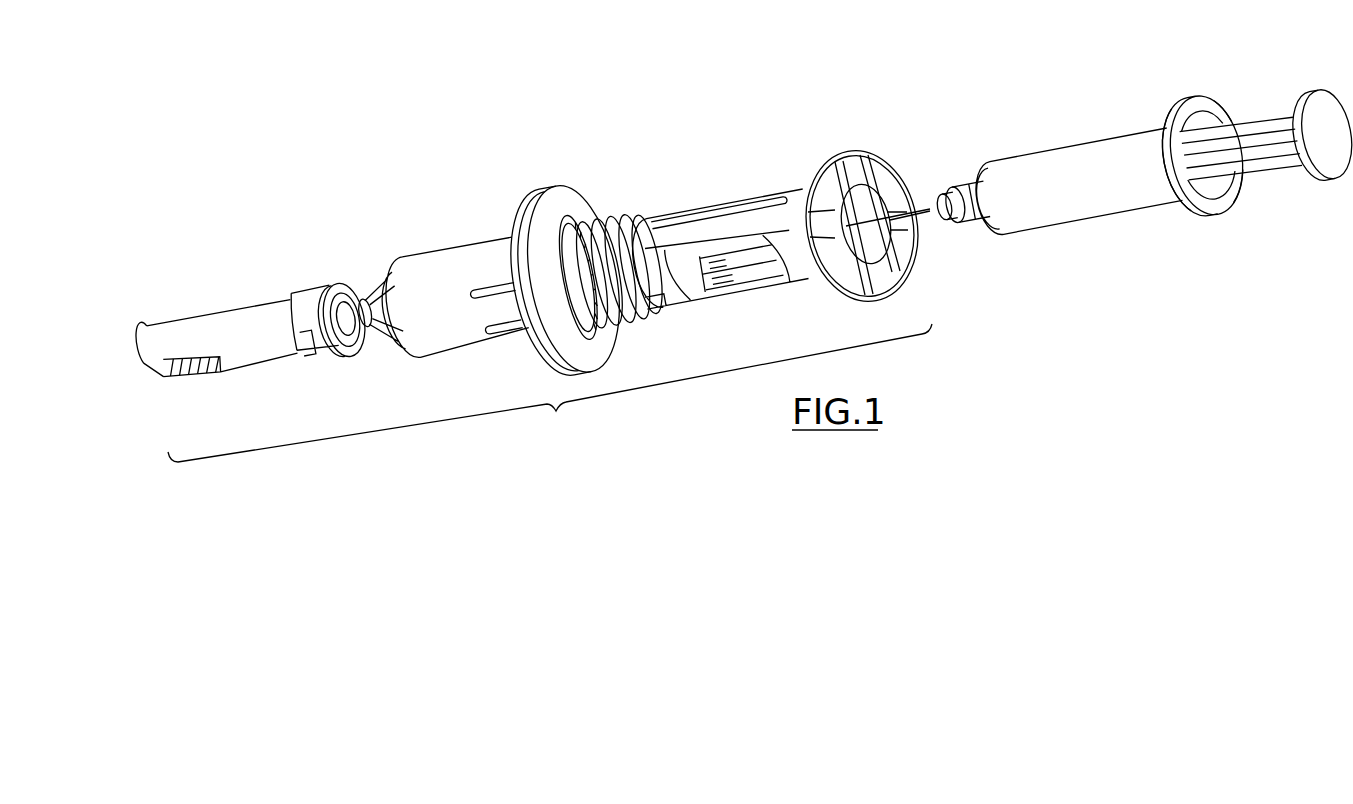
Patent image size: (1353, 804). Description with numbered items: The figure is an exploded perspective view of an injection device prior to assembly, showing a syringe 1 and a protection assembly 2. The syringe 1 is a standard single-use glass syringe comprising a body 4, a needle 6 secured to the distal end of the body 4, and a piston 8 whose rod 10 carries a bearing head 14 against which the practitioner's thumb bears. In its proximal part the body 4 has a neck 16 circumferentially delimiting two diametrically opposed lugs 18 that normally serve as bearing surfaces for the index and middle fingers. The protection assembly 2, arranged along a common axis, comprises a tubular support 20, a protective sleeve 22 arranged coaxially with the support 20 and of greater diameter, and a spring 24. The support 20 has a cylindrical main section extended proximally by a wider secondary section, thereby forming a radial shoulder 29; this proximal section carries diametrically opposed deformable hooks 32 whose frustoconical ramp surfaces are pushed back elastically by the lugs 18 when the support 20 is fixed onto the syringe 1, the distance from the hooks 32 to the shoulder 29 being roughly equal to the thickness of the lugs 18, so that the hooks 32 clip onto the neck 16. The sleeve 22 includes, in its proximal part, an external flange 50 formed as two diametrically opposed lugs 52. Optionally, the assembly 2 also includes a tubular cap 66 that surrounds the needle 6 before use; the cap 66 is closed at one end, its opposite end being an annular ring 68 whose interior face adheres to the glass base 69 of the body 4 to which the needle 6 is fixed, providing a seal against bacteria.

The syringe 1 is at (1116, 102).
The protection assembly 2 is at (544, 278).
The syringe body 4 is at (1059, 153).
The needle 6 is at (927, 210).
The piston 8 is at (1283, 90).
The rod 10 is at (1275, 165).
The bearing head 14 is at (1325, 113).
The neck 16 is at (1191, 83).
The lugs 18 is at (1162, 158).
The support 20 is at (733, 187).
The protective sleeve 22 is at (434, 242).
The spring 24 is at (630, 218).
The radial shoulder 29 is at (843, 282).
The deformable hooks 32 is at (886, 172).
The external flange 50 is at (560, 168).
The lugs 52 is at (546, 212).
The cap 66 is at (234, 287).
The annular ring 68 is at (320, 296).
The glass base 69 is at (968, 192).